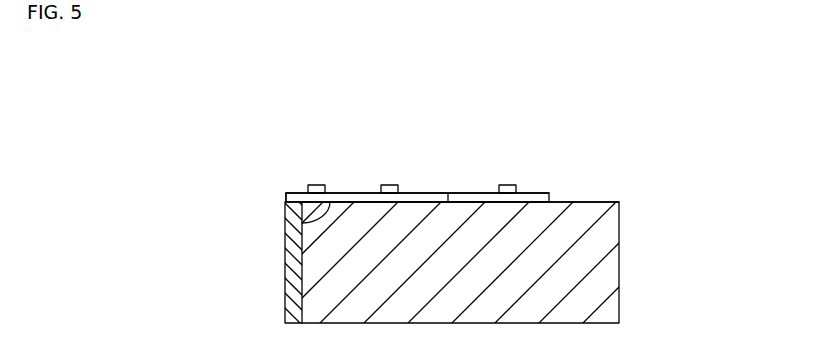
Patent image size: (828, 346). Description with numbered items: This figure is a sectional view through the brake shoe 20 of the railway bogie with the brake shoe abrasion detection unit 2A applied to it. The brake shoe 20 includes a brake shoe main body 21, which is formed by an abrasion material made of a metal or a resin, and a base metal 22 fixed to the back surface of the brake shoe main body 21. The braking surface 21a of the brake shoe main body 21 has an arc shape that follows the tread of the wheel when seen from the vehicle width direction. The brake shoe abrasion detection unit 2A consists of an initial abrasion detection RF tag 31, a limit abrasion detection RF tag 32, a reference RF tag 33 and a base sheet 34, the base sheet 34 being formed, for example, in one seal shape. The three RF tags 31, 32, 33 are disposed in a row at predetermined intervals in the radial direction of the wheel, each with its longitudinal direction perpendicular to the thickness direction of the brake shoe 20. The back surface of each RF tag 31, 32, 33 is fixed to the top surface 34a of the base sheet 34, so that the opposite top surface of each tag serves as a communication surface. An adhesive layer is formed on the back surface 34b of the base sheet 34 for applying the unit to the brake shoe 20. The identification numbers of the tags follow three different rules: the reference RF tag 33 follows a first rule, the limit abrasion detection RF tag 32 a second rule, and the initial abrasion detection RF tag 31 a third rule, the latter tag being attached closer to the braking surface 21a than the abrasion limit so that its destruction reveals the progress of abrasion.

The brake shoe 20 is at (455, 206).
The brake shoe main body 21 is at (606, 263).
The braking surface 21a is at (620, 222).
The base metal 22 is at (284, 270).
The base sheet 34 is at (543, 191).
The top surface of the base sheet 34a is at (462, 192).
The back surface of the base sheet 34b is at (305, 222).
The reference RF tag 33 is at (317, 185).
The limit abrasion detection RF tag 32 is at (389, 185).
The initial abrasion detection RF tag 31 is at (502, 186).
The brake shoe abrasion detection unit 2A is at (291, 192).